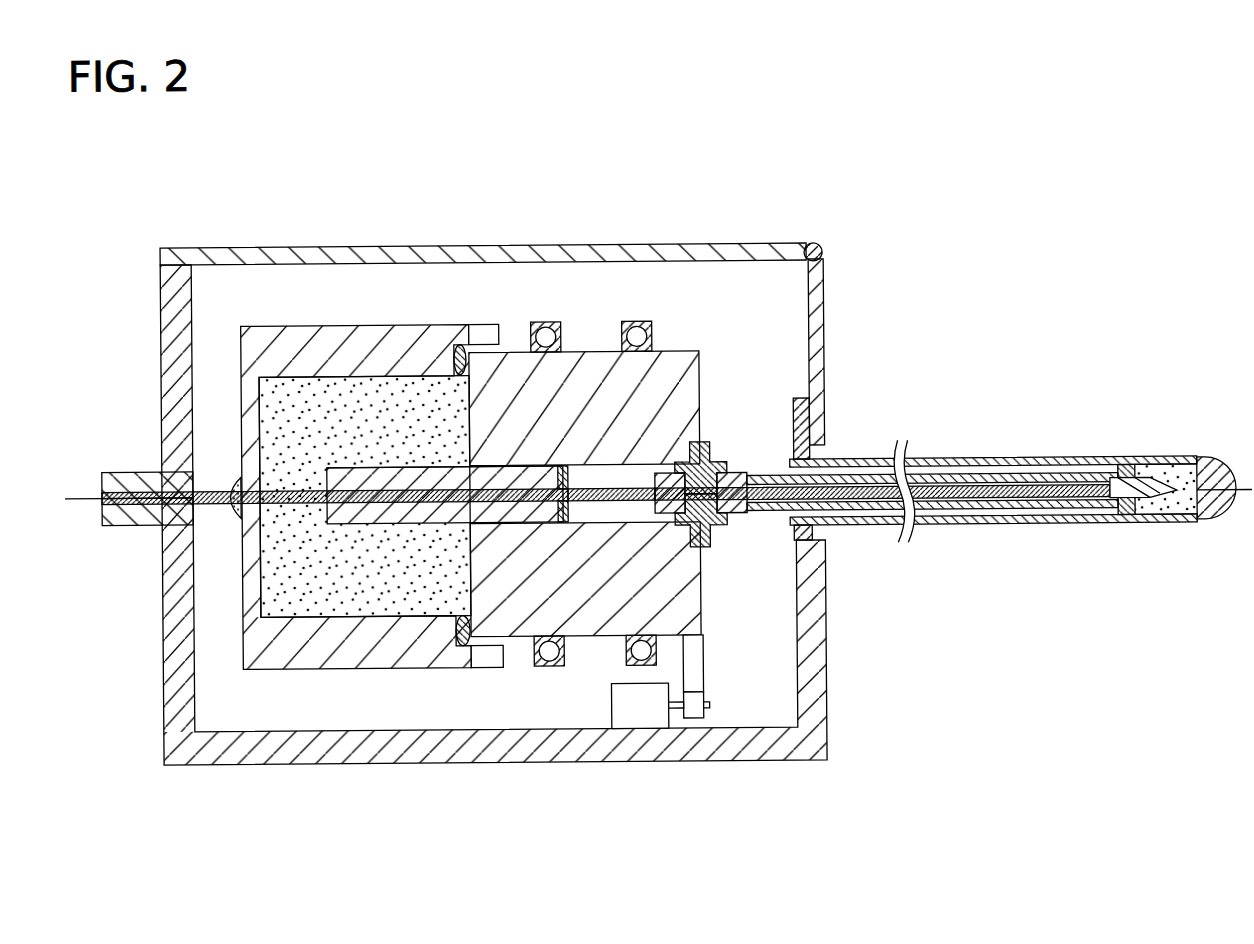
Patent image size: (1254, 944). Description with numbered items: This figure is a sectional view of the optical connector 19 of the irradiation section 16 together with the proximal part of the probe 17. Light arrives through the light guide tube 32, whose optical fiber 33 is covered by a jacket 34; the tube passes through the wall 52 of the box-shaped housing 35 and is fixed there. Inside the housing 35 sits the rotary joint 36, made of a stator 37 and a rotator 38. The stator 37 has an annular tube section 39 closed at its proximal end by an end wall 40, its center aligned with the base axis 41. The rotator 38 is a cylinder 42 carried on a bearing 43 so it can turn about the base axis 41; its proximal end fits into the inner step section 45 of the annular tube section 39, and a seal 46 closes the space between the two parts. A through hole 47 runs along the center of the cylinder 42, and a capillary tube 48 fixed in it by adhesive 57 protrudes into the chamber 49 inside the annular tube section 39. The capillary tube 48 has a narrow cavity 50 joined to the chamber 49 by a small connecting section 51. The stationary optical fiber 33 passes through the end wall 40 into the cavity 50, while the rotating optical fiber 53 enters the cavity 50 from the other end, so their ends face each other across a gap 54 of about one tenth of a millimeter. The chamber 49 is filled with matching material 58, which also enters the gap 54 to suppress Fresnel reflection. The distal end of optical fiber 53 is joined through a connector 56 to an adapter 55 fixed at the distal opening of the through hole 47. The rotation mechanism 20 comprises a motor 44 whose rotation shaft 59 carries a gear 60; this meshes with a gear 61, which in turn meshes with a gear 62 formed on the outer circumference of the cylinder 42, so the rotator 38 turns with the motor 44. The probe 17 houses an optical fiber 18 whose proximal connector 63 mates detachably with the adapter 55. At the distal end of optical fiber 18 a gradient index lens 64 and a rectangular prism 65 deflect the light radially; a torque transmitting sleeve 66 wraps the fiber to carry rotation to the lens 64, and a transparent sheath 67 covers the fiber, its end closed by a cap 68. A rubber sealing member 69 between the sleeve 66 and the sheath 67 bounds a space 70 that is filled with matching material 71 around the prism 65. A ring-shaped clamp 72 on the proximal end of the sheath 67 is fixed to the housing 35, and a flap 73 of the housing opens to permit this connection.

The irradiation section 16 is at (962, 460).
The probe 17 is at (1078, 464).
The optical fiber 18 is at (1012, 480).
The optical connector 19 is at (119, 214).
The rotation mechanism 20 is at (820, 817).
The light guide tube 32 is at (134, 471).
The optical fiber 33 is at (223, 478).
The jacket 34 is at (134, 524).
The housing 35 is at (821, 243).
The rotary joint 36 is at (806, 246).
The stator 37 is at (428, 343).
The rotator 38 is at (755, 319).
The annular tube section 39 is at (303, 648).
The end wall 40 is at (250, 602).
The base axis 41 is at (86, 496).
The cylinder 42 is at (672, 372).
The bearing 43 is at (548, 324).
The motor 44 is at (637, 718).
The inner step section 45 is at (467, 647).
The seal 46 is at (462, 345).
The through hole 47 is at (690, 533).
The capillary tube 48 is at (380, 475).
The chamber 49 is at (304, 400).
The cavity 50 is at (389, 468).
The connecting section 51 is at (564, 480).
The wall 52 is at (175, 341).
The optical fiber 53 is at (678, 524).
The gap 54 is at (452, 503).
The adapter 55 is at (712, 530).
The connector 56 is at (570, 478).
The adhesive 57 is at (700, 448).
The matching material 58 is at (283, 570).
The rotation shaft 59 is at (678, 712).
The gear 60 is at (694, 722).
The gear 61 is at (703, 672).
The gear 62 is at (703, 642).
The connector 63 is at (746, 512).
The gradient index lens 64 is at (1147, 474).
The rectangular prism 65 is at (1168, 478).
The torque transmitting sleeve 66 is at (1010, 515).
The sheath 67 is at (1057, 529).
The cap 68 is at (1210, 527).
The sealing member 69 is at (1125, 522).
The space 70 is at (1150, 520).
The matching material 71 is at (1191, 553).
The clamp 72 is at (792, 458).
The flap 73 is at (232, 247).